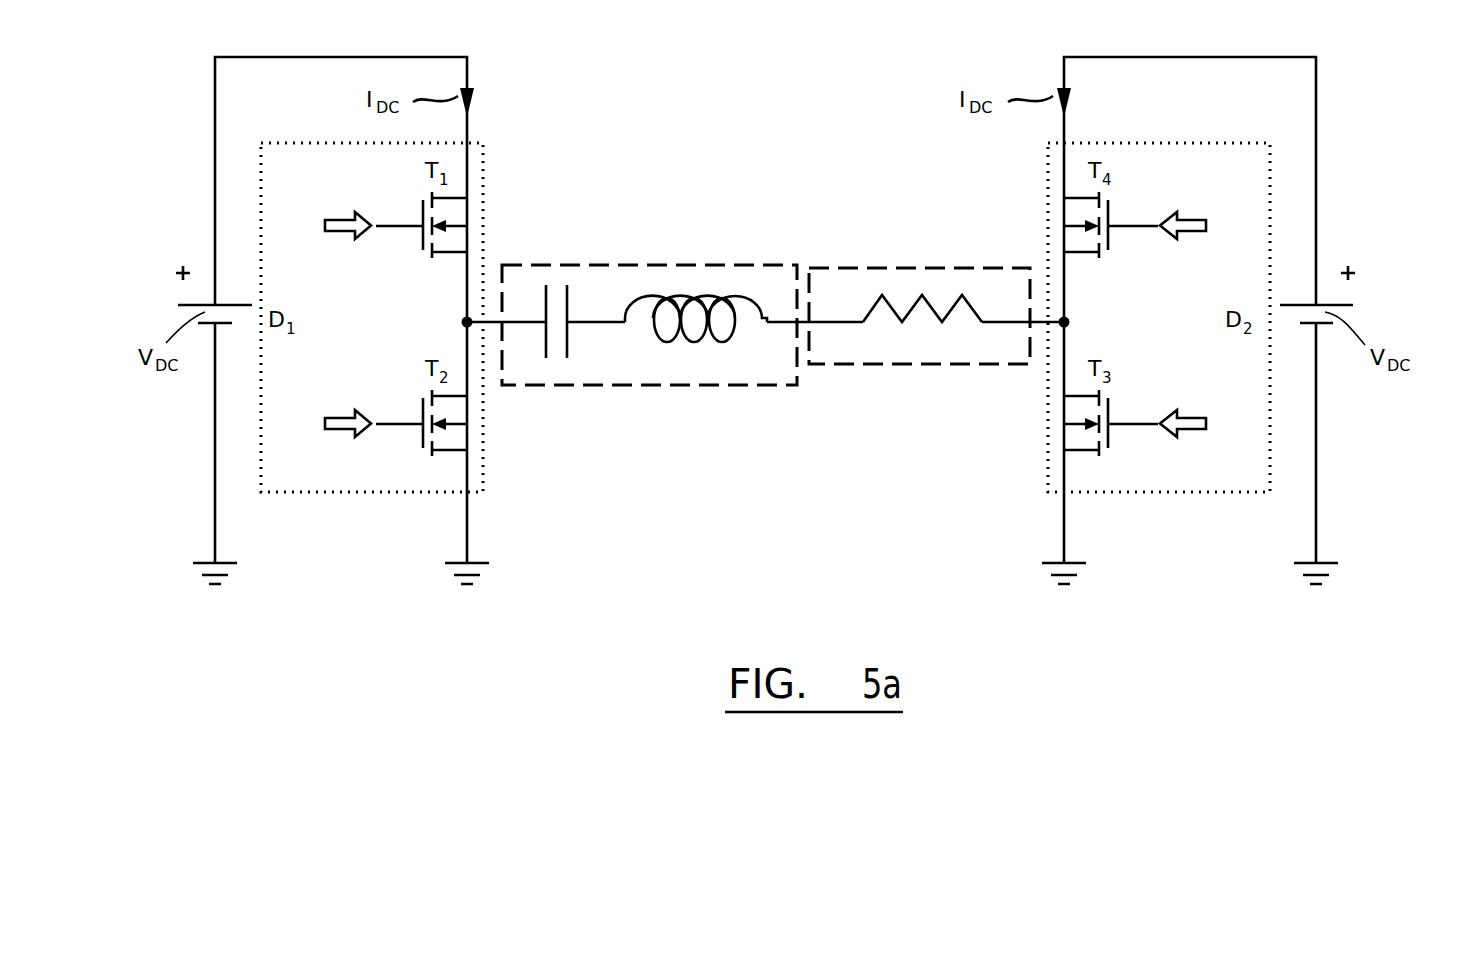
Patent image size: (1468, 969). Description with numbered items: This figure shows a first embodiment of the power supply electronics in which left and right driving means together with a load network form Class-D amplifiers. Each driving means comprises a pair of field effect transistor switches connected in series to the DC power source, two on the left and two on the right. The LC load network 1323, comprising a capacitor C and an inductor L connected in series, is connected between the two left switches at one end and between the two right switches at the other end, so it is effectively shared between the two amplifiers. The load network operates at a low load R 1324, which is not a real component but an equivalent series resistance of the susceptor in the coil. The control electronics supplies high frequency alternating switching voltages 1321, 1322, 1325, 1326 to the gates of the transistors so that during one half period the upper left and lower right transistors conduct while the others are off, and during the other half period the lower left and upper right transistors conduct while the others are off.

The high frequency alternating switching voltage 1321 is at (318, 226).
The high frequency alternating switching voltage 1322 is at (318, 424).
The LC load network 1323 is at (650, 265).
The load R 1324 is at (918, 268).
The high frequency alternating switching voltage 1325 is at (1210, 226).
The high frequency alternating switching voltage 1326 is at (1210, 424).